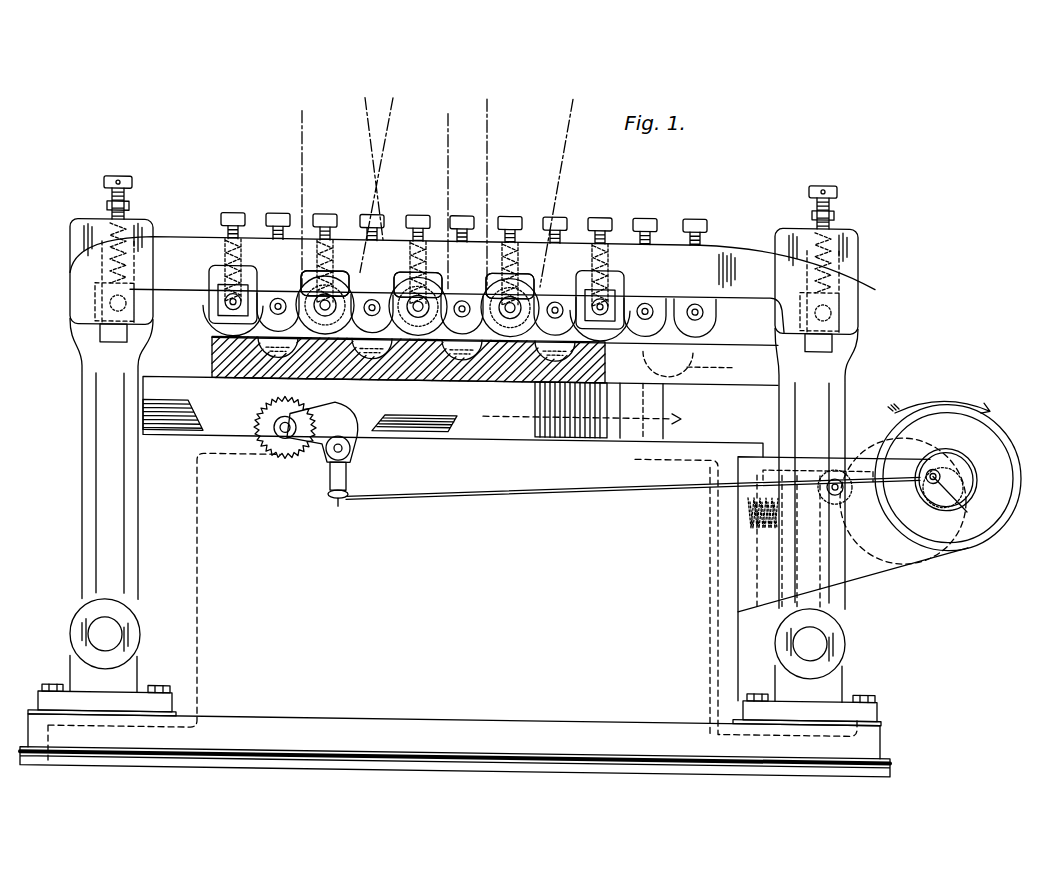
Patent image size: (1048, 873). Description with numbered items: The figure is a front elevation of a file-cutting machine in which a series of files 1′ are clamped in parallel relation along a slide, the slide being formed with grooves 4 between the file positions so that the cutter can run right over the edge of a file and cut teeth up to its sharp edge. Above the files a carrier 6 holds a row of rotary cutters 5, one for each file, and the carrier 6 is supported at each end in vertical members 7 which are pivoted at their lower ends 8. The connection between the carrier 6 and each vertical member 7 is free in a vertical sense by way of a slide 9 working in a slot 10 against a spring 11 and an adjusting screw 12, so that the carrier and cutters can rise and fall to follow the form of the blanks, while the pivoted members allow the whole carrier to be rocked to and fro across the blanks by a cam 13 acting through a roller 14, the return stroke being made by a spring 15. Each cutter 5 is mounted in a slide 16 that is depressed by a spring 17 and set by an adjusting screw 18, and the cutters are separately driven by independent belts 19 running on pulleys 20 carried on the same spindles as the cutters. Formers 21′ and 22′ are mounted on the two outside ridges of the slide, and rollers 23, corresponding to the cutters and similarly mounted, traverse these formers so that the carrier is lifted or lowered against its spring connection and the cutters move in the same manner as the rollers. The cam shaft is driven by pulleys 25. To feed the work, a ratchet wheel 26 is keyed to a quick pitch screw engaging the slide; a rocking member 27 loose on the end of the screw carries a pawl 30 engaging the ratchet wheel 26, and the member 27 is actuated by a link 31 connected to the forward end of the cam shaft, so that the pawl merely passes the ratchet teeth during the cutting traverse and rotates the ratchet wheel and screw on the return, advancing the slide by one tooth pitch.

The file 1′ is at (522, 345).
The groove 4 is at (400, 335).
The rotary cutter 5 is at (330, 334).
The carrier 6 is at (172, 288).
The vertical member 7 is at (110, 382).
The pivot 8 is at (100, 627).
The slide 9 is at (103, 285).
The slot 10 is at (70, 275).
The spring 11 is at (102, 246).
The adjusting screw 12 is at (124, 189).
The cam 13 is at (880, 536).
The roller 14 is at (838, 459).
The spring 15 is at (737, 505).
The slide 16 is at (341, 296).
The spring 17 is at (301, 253).
The adjusting screw 18 is at (462, 213).
The belt 19 is at (448, 152).
The pulley 20 is at (264, 375).
The former 21′ is at (215, 345).
The former 22′ is at (612, 342).
The roller 23 is at (228, 319).
The pulley 25 is at (995, 532).
The ratchet wheel 26 is at (280, 452).
The rocking member 27 is at (327, 446).
The pawl 30 is at (352, 423).
The link 31 is at (457, 489).